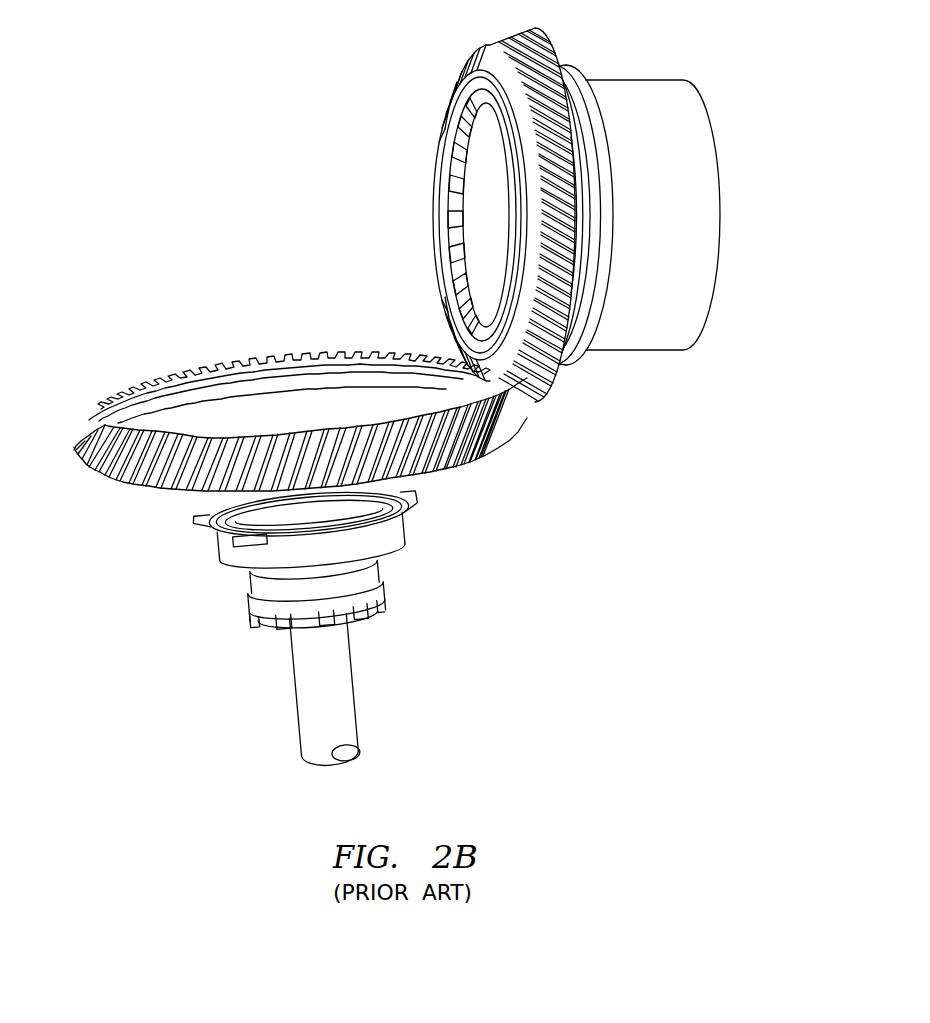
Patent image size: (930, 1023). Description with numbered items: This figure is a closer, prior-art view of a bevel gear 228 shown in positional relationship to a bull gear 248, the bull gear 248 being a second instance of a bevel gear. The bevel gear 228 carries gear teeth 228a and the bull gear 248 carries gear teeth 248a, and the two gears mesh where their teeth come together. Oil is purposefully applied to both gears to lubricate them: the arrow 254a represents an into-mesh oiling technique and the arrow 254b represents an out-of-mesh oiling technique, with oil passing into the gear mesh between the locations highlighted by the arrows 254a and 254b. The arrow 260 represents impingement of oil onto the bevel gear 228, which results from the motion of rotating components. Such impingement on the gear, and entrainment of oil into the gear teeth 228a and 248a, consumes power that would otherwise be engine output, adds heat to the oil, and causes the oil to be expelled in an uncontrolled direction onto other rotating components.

The bevel gear 228 is at (279, 387).
The gear teeth 228a is at (96, 421).
The bull gear 248 is at (536, 230).
The gear teeth 248a is at (507, 50).
The arrow 254a is at (447, 347).
The arrow 254b is at (540, 410).
The arrow 260 is at (296, 385).